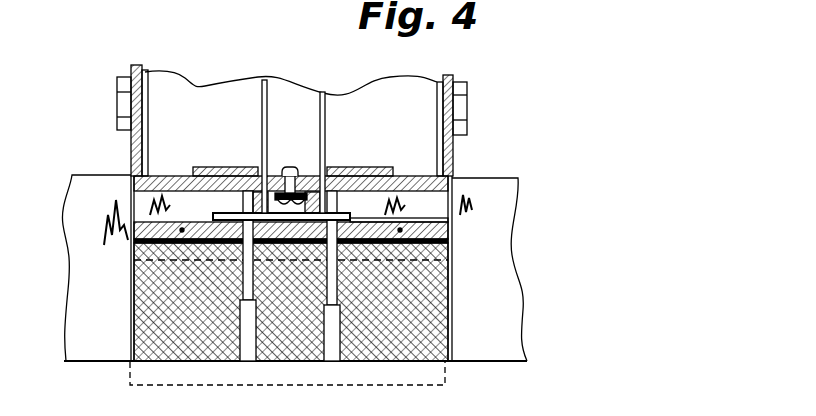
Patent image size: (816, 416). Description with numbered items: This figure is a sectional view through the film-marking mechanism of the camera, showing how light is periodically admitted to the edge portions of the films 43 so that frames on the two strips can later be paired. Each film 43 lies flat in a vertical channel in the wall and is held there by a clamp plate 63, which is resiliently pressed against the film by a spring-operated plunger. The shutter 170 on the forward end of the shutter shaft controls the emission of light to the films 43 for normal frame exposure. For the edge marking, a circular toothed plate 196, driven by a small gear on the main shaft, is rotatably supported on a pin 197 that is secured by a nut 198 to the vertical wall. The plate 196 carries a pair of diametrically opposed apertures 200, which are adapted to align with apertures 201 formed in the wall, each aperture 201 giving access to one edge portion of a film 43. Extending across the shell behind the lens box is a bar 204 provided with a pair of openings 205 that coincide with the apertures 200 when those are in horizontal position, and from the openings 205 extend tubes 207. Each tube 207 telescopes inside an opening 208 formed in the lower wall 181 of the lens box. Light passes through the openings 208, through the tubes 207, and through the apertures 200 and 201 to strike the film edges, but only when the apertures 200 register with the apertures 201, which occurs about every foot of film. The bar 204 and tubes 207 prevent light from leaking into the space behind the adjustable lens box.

The film 43 is at (229, 176).
The clamp plate 63 is at (215, 167).
The shutter 170 is at (216, 214).
The lower wall of the lens box 181 is at (408, 342).
The circular toothed plate 196 is at (327, 176).
The pin 197 is at (311, 176).
The nut 198 is at (290, 167).
The apertures 200 is at (404, 185).
The apertures 201 is at (266, 176).
The bar 204 is at (452, 238).
The openings 205 is at (375, 220).
The tubes 207 is at (338, 292).
The openings 208 is at (336, 325).